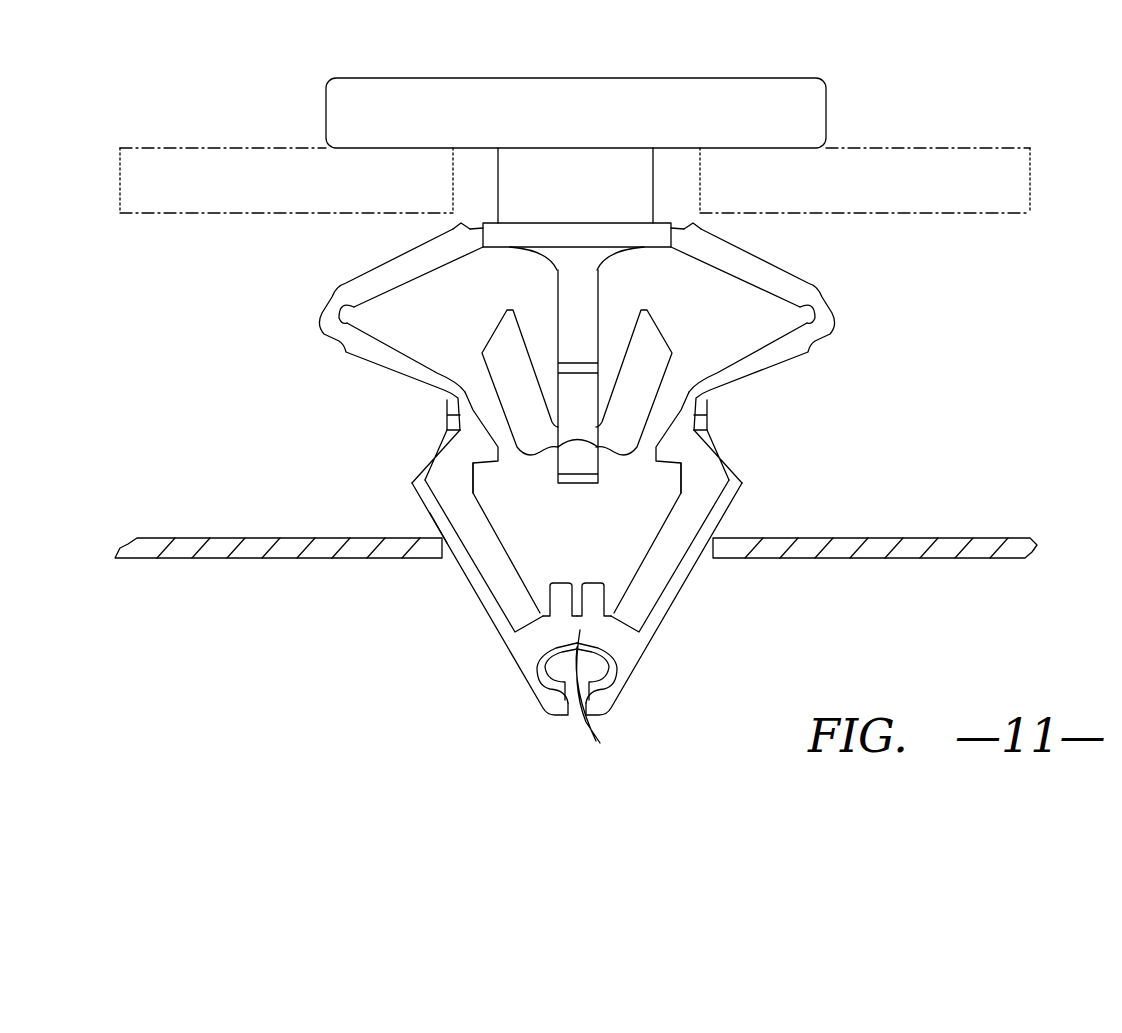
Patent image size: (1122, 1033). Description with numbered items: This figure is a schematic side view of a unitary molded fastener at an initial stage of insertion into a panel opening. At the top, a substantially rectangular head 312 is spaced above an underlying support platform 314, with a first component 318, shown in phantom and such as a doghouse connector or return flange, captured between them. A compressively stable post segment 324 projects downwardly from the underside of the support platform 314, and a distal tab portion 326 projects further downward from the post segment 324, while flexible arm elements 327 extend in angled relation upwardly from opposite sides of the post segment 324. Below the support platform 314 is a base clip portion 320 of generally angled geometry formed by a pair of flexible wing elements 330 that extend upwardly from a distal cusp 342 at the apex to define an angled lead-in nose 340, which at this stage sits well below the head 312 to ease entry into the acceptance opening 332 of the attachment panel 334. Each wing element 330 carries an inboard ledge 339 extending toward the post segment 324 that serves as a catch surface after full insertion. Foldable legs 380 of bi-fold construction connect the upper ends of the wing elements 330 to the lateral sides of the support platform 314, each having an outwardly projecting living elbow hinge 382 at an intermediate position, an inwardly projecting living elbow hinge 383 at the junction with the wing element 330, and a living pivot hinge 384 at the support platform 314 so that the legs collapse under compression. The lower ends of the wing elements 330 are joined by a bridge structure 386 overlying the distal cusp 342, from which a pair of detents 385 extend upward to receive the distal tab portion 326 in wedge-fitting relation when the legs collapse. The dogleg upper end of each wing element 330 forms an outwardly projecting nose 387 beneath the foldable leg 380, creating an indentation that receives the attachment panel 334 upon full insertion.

The head 312 is at (718, 78).
The first component 318 is at (190, 148).
The support platform 314 is at (513, 250).
The post segment 324 is at (600, 284).
The distal tab portion 326 is at (573, 487).
The foldable legs 380 is at (353, 362).
The outwardly projecting living elbow hinge 382 is at (330, 341).
The living pivot hinge 384 is at (470, 228).
The inwardly projecting living elbow hinge 383 is at (452, 396).
The flexible arm elements 327 is at (510, 393).
The outwardly projecting nose 387 is at (418, 470).
The base clip portion 320 is at (410, 482).
The flexible wing elements 330 is at (502, 648).
The acceptance opening 332 is at (447, 563).
The inboard ledge 339 is at (489, 467).
The detents 385 is at (553, 580).
The angled lead-in nose 340 is at (643, 668).
The bridge structure 386 is at (598, 742).
The distal cusp 342 is at (575, 726).
The attachment panel 334 is at (920, 538).